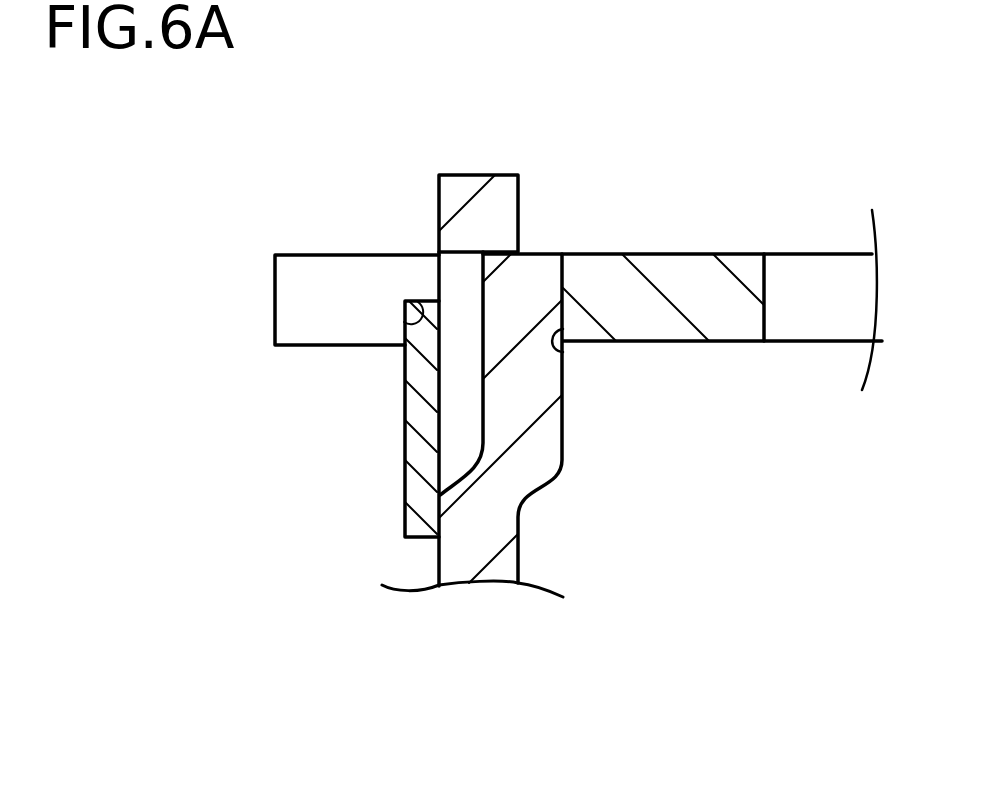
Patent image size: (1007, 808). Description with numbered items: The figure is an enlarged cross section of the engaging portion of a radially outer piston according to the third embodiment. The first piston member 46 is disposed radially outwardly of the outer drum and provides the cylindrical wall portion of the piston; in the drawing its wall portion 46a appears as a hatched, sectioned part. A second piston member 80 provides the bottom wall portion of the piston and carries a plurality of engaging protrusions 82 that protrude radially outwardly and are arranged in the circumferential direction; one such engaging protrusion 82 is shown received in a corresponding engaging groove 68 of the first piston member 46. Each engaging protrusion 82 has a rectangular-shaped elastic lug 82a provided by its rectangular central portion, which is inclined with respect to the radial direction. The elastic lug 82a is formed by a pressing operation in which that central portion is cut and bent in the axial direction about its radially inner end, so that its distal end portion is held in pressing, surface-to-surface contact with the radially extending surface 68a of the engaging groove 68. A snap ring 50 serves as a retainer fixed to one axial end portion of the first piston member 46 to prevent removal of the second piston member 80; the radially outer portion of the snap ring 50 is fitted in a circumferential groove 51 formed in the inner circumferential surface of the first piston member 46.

The first piston member 46 is at (677, 159).
The wall portion of member 46 46a is at (700, 291).
The snap ring 50 is at (415, 423).
The circumferential groove 51 is at (404, 319).
The engaging groove 68 is at (315, 283).
The radially extending surface 68a is at (557, 349).
The second piston member 80 is at (571, 543).
The engaging protrusion 82 is at (483, 168).
The elastic lug 82a is at (525, 277).